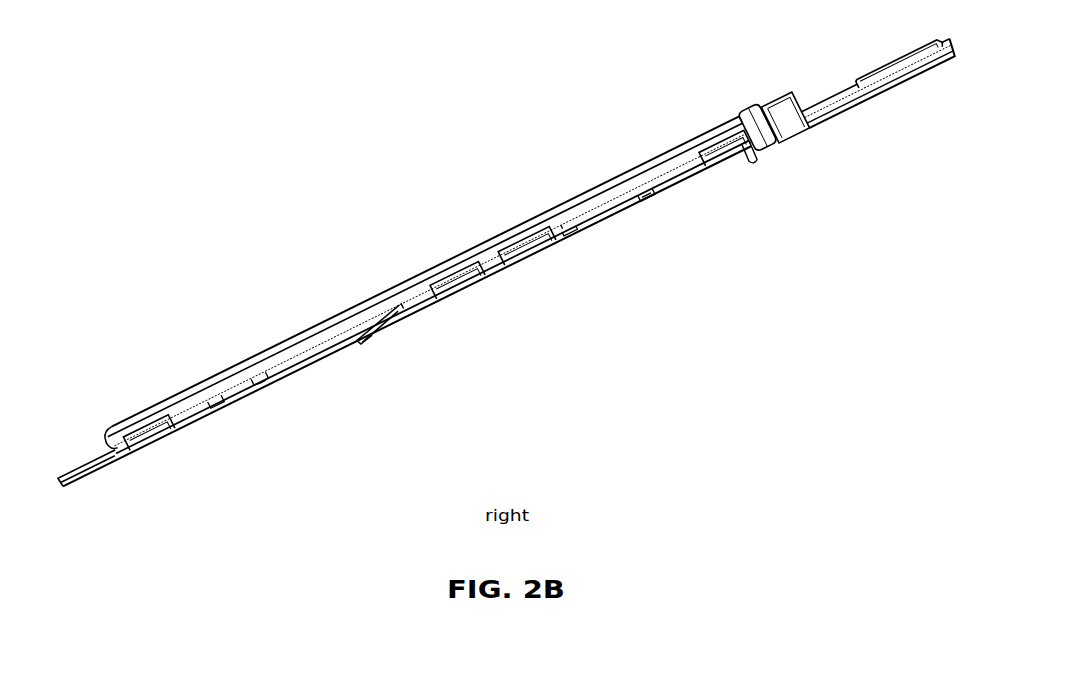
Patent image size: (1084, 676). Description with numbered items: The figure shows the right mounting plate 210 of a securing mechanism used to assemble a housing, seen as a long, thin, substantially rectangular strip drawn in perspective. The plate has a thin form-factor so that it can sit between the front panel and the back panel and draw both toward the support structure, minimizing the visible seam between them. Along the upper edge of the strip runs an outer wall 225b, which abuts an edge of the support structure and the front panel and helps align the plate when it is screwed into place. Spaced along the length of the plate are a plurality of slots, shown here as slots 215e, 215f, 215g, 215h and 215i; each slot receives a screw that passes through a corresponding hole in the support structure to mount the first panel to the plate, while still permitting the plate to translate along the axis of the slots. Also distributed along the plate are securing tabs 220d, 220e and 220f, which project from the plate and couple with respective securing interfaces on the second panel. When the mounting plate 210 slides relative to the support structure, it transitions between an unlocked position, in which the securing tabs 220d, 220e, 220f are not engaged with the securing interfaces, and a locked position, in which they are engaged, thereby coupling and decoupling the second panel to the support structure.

The right mounting plate 210 is at (413, 171).
The outer wall 225b is at (470, 251).
The slot 215e is at (157, 428).
The slot 215f is at (458, 279).
The slot 215g is at (528, 244).
The slot 215h is at (727, 146).
The slot 215i is at (838, 103).
The securing tab 220d is at (85, 473).
The securing tab 220e is at (389, 321).
The securing tab 220f is at (653, 191).